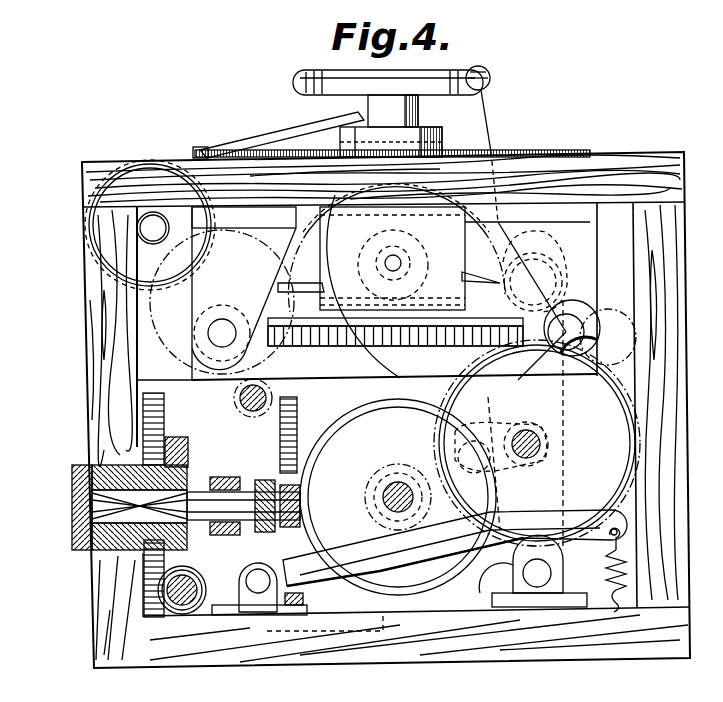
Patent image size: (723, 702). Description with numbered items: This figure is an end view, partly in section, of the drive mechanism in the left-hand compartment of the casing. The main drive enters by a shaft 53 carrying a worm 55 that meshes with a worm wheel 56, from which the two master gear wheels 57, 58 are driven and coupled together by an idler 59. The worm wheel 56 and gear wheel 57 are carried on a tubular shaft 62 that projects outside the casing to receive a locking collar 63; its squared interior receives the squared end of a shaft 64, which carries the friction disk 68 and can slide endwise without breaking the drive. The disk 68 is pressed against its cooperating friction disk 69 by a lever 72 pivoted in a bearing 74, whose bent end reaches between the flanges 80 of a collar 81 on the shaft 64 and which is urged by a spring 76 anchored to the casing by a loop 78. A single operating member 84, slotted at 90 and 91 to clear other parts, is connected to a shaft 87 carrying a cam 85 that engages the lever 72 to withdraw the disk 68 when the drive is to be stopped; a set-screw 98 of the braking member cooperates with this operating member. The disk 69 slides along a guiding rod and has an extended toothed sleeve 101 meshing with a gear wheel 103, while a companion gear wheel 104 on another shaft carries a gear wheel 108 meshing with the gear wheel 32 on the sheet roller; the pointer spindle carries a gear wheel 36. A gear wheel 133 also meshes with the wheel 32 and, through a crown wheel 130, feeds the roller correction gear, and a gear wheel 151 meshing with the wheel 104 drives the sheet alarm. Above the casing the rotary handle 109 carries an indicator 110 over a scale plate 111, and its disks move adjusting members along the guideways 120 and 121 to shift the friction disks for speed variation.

The rotary handle 109 is at (300, 82).
The indicator 110 is at (290, 136).
The operating member 84 is at (489, 115).
The scale plate 111 is at (520, 150).
The gear wheel 133 is at (378, 188).
The gear wheel 151 is at (97, 238).
The gear wheel 32 is at (134, 293).
The gear wheel 104 is at (110, 362).
The guideway 120 is at (224, 332).
The crown wheel 130 is at (395, 314).
The slot 91 is at (505, 269).
The set-screw 98 is at (550, 257).
The gear wheel 36 is at (600, 320).
The guideway 121 is at (522, 379).
The master gear wheel 58 is at (155, 394).
The worm wheel 56 is at (180, 438).
The flanges 80 is at (222, 477).
The collar 81 is at (262, 480).
The gear wheel 108 is at (273, 398).
The friction disk 69 is at (373, 420).
The slot 90 is at (537, 443).
The tubular shaft 62 is at (88, 489).
The shaft 64 is at (88, 515).
The locking collar 63 is at (86, 540).
The gear wheel 103 is at (566, 510).
The master gear wheel 57 is at (150, 572).
The idler 59 is at (168, 588).
The shaft 53 is at (180, 605).
The worm 55 is at (200, 612).
The bearing 74 is at (256, 595).
The friction disk 68 is at (275, 615).
The lever 72 is at (330, 580).
The sleeve 101 is at (482, 612).
The cam 85 is at (512, 590).
The shaft 87 is at (538, 580).
The loop 78 is at (612, 612).
The spring 76 is at (624, 582).